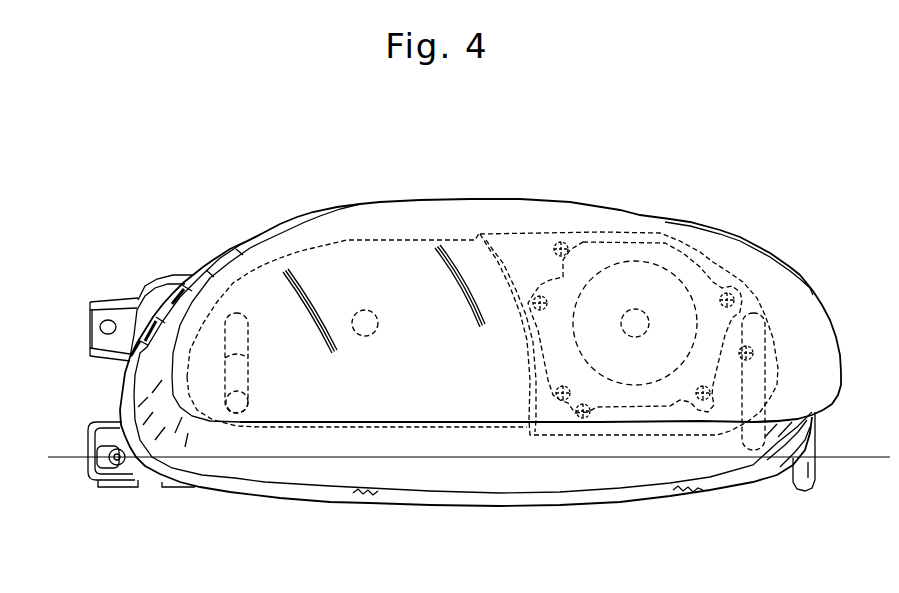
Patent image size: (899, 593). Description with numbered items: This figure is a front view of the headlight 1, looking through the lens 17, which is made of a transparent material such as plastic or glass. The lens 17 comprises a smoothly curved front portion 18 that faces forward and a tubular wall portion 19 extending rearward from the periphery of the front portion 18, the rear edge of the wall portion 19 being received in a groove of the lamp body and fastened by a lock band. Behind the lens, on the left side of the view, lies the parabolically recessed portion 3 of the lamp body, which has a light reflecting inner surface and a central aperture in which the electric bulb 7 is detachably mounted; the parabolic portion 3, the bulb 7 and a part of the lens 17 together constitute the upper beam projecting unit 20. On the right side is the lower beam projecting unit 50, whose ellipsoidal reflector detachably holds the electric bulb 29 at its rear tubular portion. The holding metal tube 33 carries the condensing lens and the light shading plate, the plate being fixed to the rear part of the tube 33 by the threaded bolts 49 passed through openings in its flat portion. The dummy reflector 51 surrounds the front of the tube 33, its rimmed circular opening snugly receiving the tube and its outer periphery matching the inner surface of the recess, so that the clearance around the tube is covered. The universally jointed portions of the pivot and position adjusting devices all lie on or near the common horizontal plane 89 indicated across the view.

The headlight 1 is at (850, 139).
The parabolically recessed portion 3 is at (399, 240).
The electric bulb 7 is at (362, 310).
The lens 17 is at (510, 489).
The front portion 18 is at (584, 476).
The tubular wall portion 19 is at (212, 420).
The upper beam projecting unit 20 is at (471, 384).
The electric bulb 29 is at (636, 309).
The holding metal tube 33 is at (677, 250).
The threaded bolts 49 is at (728, 292).
The lower beam projecting unit 50 is at (635, 411).
The dummy reflector 51 is at (540, 232).
The common horizontal plane 89 is at (469, 488).